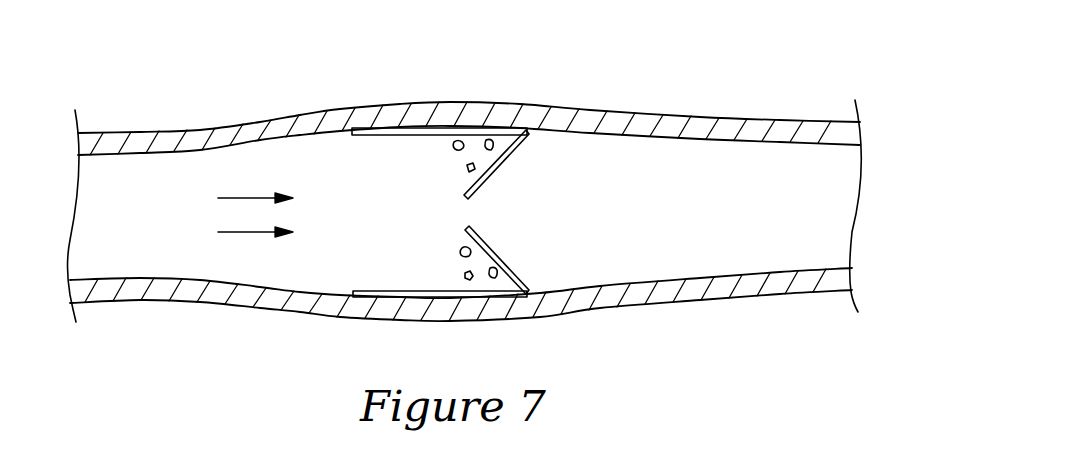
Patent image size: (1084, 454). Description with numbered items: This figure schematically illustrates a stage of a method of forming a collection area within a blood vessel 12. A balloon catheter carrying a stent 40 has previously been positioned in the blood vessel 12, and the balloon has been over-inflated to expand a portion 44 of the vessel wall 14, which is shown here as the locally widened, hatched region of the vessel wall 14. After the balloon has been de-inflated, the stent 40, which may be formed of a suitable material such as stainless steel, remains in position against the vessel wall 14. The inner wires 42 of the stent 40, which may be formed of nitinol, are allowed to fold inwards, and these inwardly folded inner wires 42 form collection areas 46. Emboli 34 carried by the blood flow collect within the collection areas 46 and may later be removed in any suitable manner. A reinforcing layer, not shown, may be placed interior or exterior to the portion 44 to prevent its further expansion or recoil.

The blood vessel 12 is at (713, 86).
The vessel wall 14 is at (241, 290).
The emboli 34 is at (467, 280).
The stent 40 is at (402, 130).
The inner wires 42 is at (518, 272).
The portion of the vessel wall 44 is at (453, 112).
The collection areas 46 is at (528, 133).